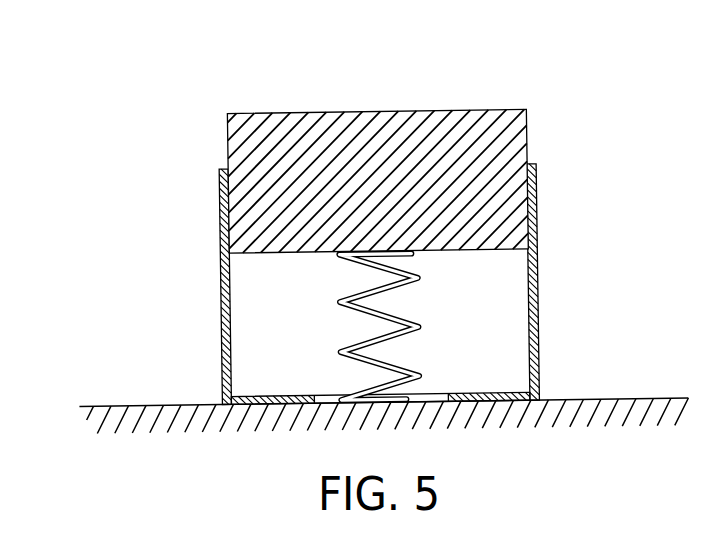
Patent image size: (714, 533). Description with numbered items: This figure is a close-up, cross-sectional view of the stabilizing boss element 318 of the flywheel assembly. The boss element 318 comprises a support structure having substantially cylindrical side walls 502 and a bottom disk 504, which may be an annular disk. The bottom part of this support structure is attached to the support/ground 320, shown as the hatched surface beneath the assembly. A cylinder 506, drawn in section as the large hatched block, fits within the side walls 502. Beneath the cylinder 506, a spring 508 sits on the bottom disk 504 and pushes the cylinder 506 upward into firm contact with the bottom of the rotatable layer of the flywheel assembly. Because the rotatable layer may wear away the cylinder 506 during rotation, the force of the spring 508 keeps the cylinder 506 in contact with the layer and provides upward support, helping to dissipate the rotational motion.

The boss element 318 is at (514, 77).
The support/ground 320 is at (109, 403).
The side walls 502 is at (221, 250).
The bottom disk 504 is at (257, 395).
The cylinder 506 is at (500, 132).
The spring 508 is at (423, 311).